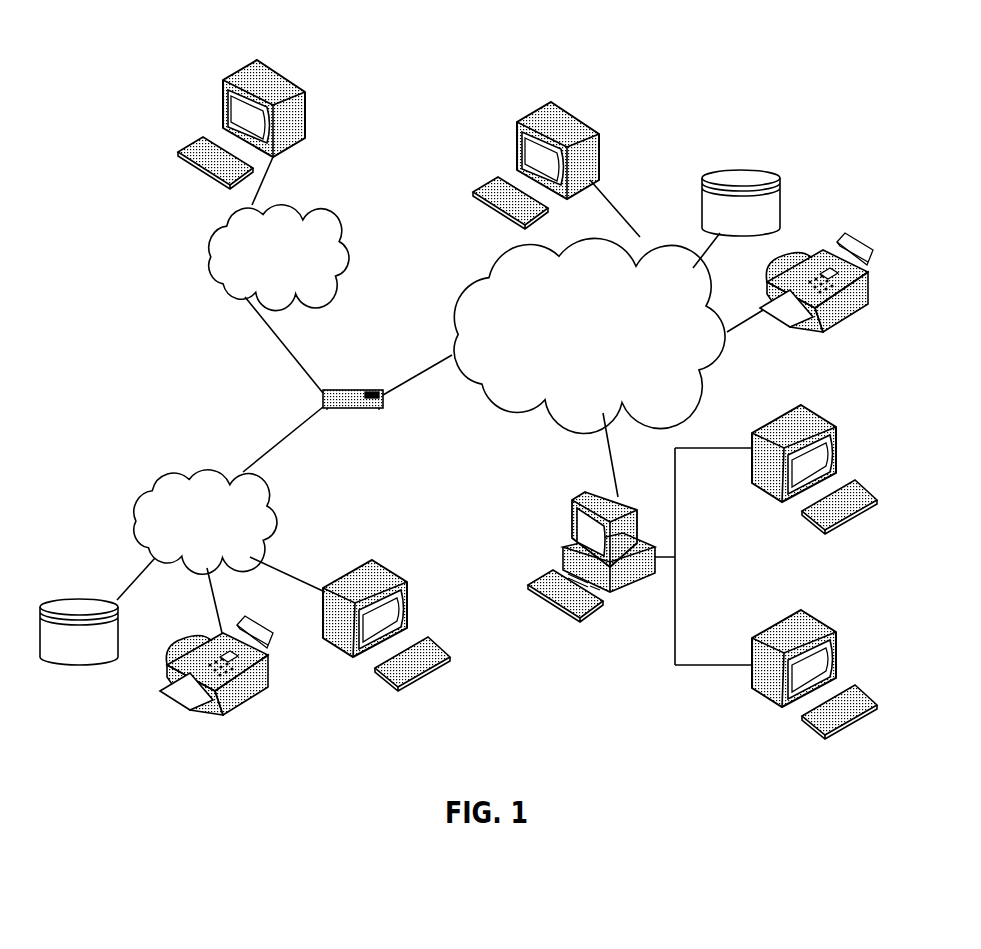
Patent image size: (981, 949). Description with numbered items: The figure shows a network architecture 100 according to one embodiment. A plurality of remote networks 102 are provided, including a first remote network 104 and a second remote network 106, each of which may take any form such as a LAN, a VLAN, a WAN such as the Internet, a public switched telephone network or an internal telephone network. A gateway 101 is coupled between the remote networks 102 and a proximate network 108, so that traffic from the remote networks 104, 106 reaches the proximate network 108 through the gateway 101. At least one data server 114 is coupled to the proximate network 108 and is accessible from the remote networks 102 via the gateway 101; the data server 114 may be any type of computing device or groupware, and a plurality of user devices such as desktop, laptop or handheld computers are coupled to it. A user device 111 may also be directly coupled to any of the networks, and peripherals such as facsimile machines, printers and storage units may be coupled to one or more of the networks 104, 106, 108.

The network architecture 100 is at (158, 47).
The gateway 101 is at (338, 390).
The remote networks 102 is at (184, 308).
The first remote network 104 is at (137, 492).
The second remote network 106 is at (345, 224).
The proximate network 108 is at (688, 392).
The user device 111 is at (600, 130).
The data server 114 is at (572, 512).